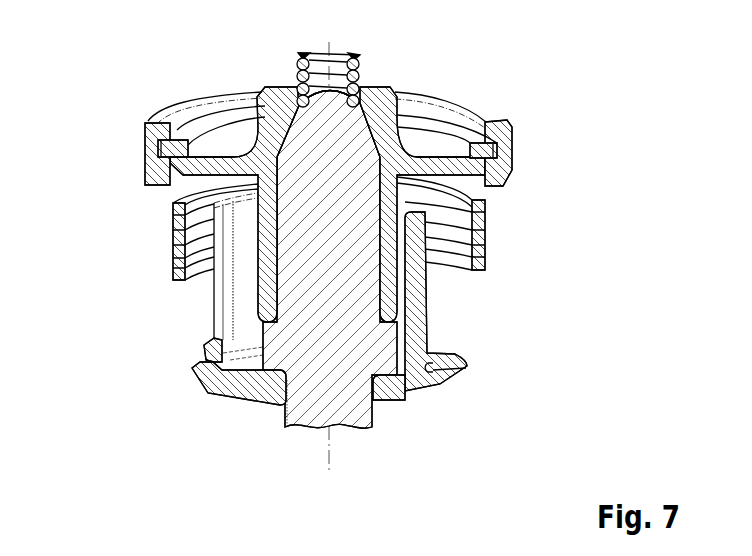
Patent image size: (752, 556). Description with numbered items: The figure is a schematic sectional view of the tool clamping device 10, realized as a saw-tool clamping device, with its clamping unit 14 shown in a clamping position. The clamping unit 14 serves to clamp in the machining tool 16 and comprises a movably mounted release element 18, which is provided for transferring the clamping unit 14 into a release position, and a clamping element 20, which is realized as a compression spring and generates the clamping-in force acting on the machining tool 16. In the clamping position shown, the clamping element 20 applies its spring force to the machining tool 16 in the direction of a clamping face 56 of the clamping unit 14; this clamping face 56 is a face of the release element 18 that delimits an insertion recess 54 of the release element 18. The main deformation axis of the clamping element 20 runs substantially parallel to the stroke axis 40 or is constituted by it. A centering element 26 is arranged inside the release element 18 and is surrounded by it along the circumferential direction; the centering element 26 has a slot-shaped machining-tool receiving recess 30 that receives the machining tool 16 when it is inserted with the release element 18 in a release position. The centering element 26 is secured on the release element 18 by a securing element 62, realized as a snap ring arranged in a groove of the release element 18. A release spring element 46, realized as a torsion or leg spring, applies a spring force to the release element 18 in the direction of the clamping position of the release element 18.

The tool clamping device 10 is at (131, 81).
The clamping unit 14 is at (376, 278).
The machining tool 16 is at (346, 412).
The release element 18 is at (443, 380).
The clamping element 20 is at (356, 56).
The centering element 26 is at (462, 168).
The machining-tool receiving recess 30 is at (280, 256).
The stroke axis 40 is at (329, 42).
The release spring element 46 is at (482, 238).
The insertion recess 54 is at (285, 420).
The clamping face 56 is at (388, 372).
The securing element 62 is at (483, 146).